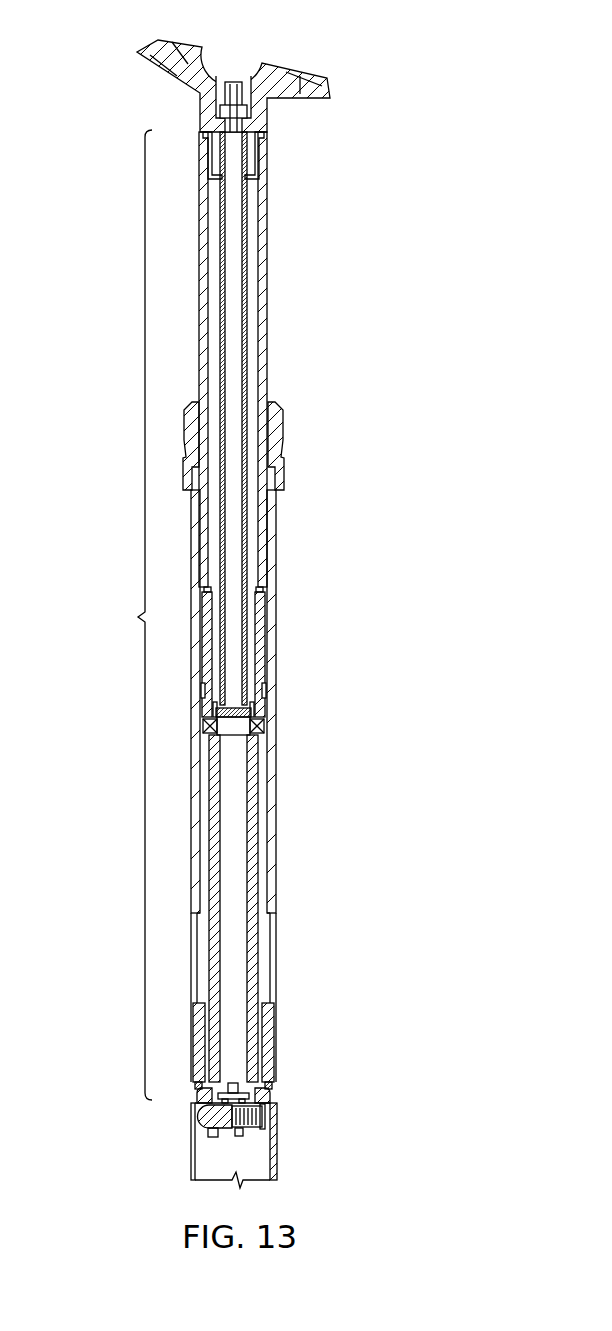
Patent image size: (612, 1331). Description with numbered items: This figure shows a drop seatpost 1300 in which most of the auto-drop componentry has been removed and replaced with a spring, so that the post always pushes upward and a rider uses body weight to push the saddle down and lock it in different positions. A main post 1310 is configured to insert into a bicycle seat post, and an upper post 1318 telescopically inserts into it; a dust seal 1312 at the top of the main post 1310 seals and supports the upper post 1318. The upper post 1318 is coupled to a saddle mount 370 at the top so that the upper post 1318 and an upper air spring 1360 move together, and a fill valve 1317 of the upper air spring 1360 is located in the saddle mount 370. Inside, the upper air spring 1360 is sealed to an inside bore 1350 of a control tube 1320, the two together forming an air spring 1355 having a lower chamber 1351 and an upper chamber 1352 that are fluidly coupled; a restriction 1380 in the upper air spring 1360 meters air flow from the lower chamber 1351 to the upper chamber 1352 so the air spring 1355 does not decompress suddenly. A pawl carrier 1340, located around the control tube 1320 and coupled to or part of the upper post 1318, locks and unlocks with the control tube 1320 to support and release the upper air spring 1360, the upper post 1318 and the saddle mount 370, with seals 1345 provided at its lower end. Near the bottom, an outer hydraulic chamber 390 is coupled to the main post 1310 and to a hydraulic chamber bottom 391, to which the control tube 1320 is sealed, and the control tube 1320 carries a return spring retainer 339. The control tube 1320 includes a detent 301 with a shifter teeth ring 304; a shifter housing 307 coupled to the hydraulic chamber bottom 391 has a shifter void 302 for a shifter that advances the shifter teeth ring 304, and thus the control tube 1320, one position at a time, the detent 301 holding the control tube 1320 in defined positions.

The drop seatpost 1300 is at (443, 58).
The finger flange head 370 is at (266, 72).
The fill valve 1317 is at (231, 84).
The upper post 1318 is at (265, 145).
The upper air spring 1360 is at (247, 248).
The upper chamber 1352 is at (230, 287).
The dust seal 1312 is at (278, 423).
The main post 1310 is at (193, 555).
The air spring 1355 is at (137, 617).
The pawl carrier 1340 is at (205, 648).
The restriction 1380 is at (247, 702).
The seal 1345 is at (262, 722).
The control tube 1320 is at (217, 795).
The inside bore 1350 is at (222, 820).
The lower chamber 1351 is at (232, 867).
The outer hydraulic chamber 390 is at (193, 1063).
The hydraulic chamber bottom 391 is at (277, 1092).
The return spring retainer 339 is at (273, 1103).
The shifter void 302 is at (220, 1157).
The shifter housing 307 is at (270, 1153).
The detent 301 is at (195, 1117).
The shifter teeth ring 304 is at (208, 1130).